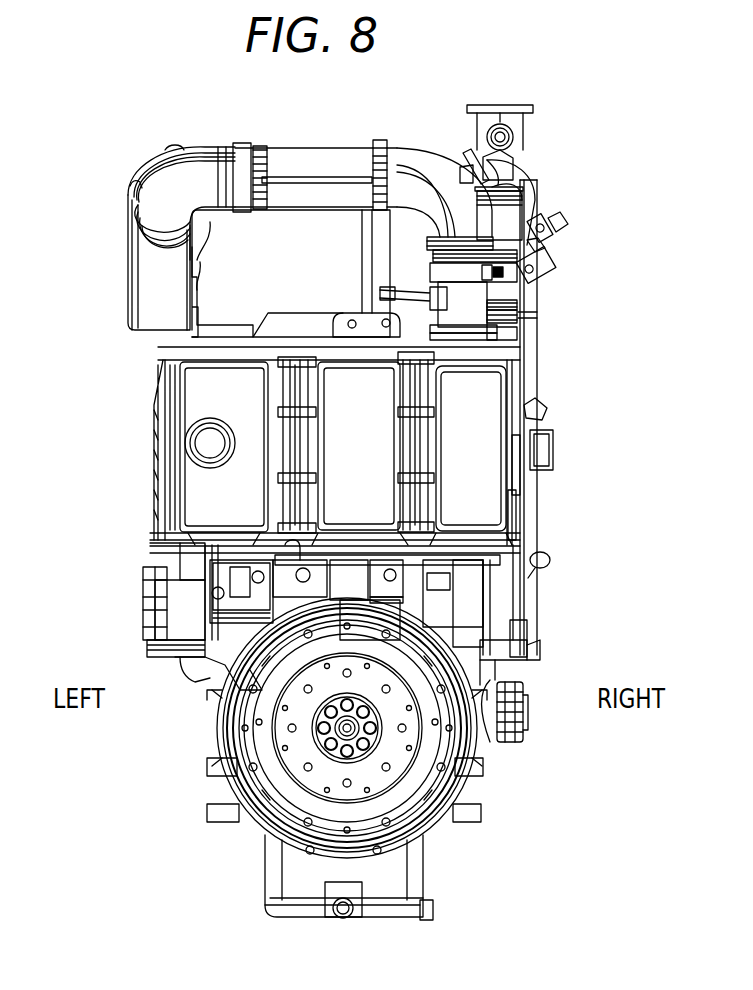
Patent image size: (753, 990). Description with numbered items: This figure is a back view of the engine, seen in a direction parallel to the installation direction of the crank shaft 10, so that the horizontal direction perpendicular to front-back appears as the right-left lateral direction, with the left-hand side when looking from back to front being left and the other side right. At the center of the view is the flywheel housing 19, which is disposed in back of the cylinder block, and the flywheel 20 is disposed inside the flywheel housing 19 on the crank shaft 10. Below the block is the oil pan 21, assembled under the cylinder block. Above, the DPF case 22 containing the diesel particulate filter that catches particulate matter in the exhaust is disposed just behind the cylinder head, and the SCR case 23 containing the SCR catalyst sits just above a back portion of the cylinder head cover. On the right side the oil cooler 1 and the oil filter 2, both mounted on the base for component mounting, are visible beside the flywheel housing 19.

The oil cooler 1 is at (513, 662).
The oil filter 2 is at (515, 715).
The crank shaft 10 is at (310, 727).
The flywheel housing 19 is at (455, 783).
The flywheel 20 is at (420, 792).
The oil pan 21 is at (398, 875).
The DPF case 22 is at (490, 500).
The SCR case 23 is at (158, 312).